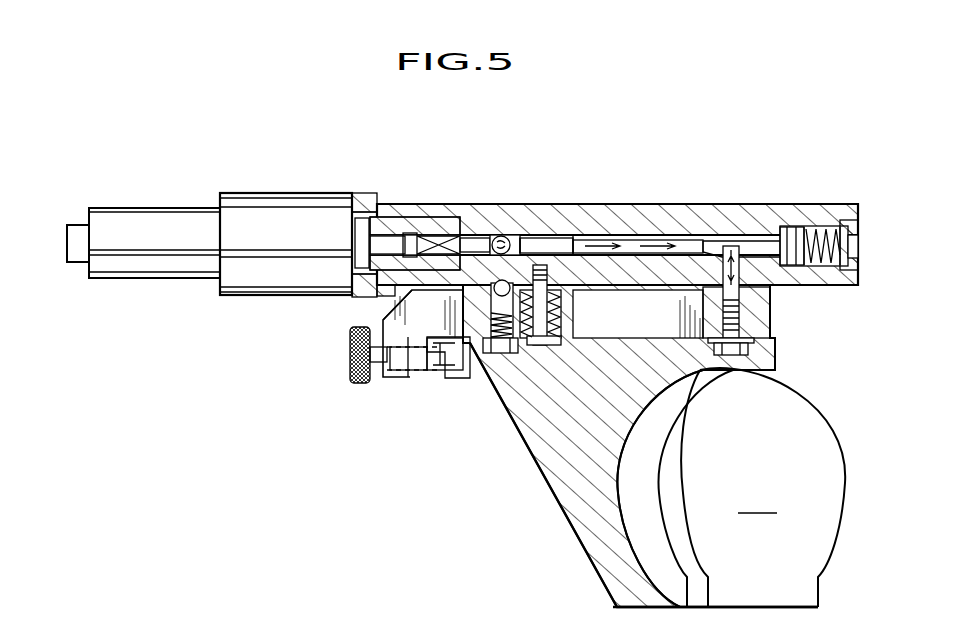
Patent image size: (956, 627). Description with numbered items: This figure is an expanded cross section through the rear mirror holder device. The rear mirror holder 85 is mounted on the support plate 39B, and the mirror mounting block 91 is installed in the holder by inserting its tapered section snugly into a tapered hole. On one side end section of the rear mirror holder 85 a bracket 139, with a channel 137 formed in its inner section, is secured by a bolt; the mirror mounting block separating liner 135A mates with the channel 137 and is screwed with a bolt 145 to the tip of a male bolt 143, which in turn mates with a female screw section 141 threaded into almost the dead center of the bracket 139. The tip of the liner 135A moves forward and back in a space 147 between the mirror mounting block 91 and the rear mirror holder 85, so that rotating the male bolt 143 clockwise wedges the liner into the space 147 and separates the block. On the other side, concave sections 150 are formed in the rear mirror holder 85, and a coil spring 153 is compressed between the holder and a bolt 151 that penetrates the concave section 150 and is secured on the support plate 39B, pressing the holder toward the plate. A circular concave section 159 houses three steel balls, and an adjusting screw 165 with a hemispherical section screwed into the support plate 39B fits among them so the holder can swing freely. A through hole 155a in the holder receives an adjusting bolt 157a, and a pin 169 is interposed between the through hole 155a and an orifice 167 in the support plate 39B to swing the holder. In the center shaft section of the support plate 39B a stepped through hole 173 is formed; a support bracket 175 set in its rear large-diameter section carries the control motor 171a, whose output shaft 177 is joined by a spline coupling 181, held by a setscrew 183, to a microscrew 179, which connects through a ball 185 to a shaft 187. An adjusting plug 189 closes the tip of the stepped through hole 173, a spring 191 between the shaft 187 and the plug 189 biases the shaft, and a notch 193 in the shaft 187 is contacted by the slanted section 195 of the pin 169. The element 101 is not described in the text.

The control motor 171a is at (252, 212).
The support bracket 175 is at (355, 195).
The output shaft 177 is at (382, 237).
The spline coupling 181 is at (430, 217).
The microscrew 179 is at (470, 237).
The ball 185 is at (502, 238).
The stepped through hole 173 is at (547, 240).
The shaft 187 is at (590, 237).
The support plate 39B is at (623, 210).
The notch 193 is at (712, 247).
The orifice 167 is at (785, 240).
The slanted section 195 is at (718, 235).
The spring 191 is at (802, 227).
The adjusting plug 189 is at (843, 218).
The setscrew 183 is at (380, 297).
The bracket 139 is at (380, 313).
The male bolt 143 is at (350, 365).
The female screw section 141 is at (395, 362).
The bolt 145 is at (433, 370).
The channel 137 is at (405, 373).
The mirror mounting block separating liner 135A is at (453, 378).
The space 147 is at (496, 363).
The circular concave section 159 is at (512, 345).
The adjusting screw 165 is at (528, 352).
The bolt 151 is at (542, 346).
The concave section 150 is at (565, 308).
The coil spring 153 is at (565, 332).
The pin 169 is at (767, 294).
The rear mirror holder 85 is at (772, 322).
The adjusting bolt 157a is at (752, 338).
The through hole 155a is at (777, 368).
The cylinder 101 is at (729, 487).
The mirror mounting block 91 is at (607, 553).